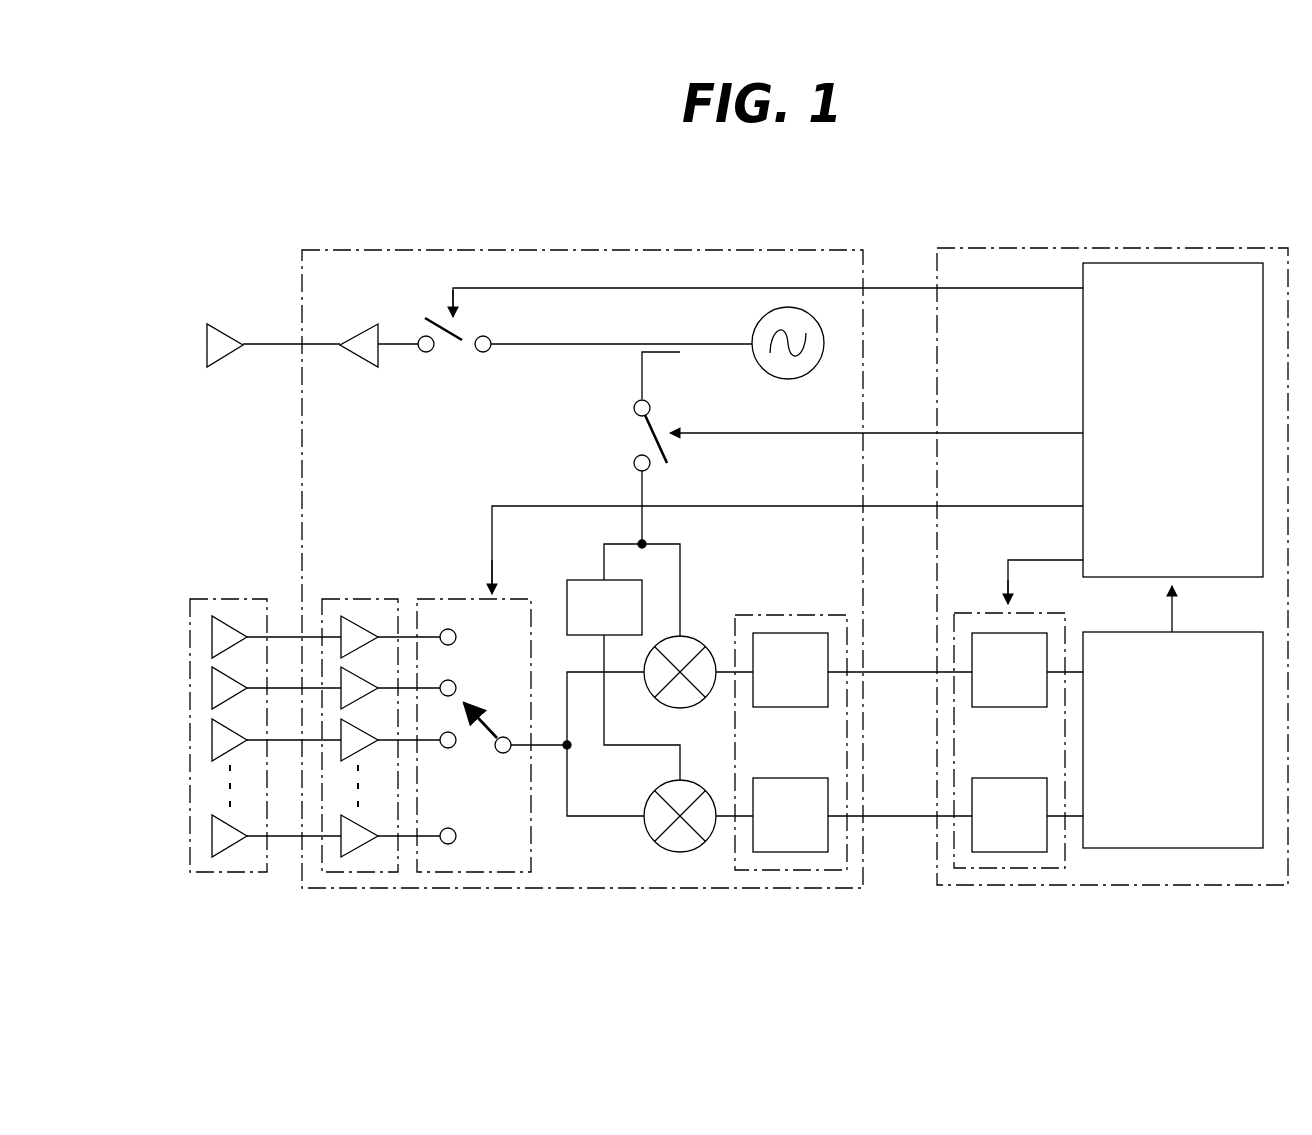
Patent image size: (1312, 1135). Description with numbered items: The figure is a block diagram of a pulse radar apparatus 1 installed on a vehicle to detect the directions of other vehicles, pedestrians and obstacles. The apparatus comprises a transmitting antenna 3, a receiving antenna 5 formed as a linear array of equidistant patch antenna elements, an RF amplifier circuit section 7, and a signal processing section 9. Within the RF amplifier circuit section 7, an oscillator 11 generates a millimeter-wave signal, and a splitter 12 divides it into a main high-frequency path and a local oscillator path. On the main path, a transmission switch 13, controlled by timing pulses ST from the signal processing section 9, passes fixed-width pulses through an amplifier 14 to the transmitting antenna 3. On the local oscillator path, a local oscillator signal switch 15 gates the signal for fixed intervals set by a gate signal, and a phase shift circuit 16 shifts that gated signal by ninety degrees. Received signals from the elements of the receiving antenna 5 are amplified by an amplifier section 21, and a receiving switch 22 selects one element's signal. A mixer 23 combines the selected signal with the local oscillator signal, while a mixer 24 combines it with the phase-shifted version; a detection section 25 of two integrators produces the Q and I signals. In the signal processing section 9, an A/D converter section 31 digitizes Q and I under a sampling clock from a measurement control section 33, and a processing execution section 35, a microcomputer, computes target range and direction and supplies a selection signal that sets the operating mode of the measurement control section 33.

The pulse radar apparatus 1 is at (396, 184).
The transmitting antenna 3 is at (230, 326).
The receiving antenna 5 is at (215, 599).
The RF amplifier circuit section 7 is at (774, 249).
The signal processing section 9 is at (977, 248).
The oscillator 11 is at (753, 320).
The splitter 12 is at (668, 355).
The transmission switch 13 is at (458, 356).
The amplifier 14 is at (354, 368).
The local oscillator signal switch 15 is at (632, 437).
The phase shift circuit 16 is at (576, 580).
The amplifier section 21 is at (345, 599).
The receiving switch 22 is at (447, 599).
The mixer 23 is at (692, 638).
The mixer 24 is at (692, 782).
The detection section 25 is at (797, 615).
The A/D converter section 31 is at (974, 612).
The measurement control section 33 is at (1082, 353).
The processing execution section 35 is at (1172, 849).